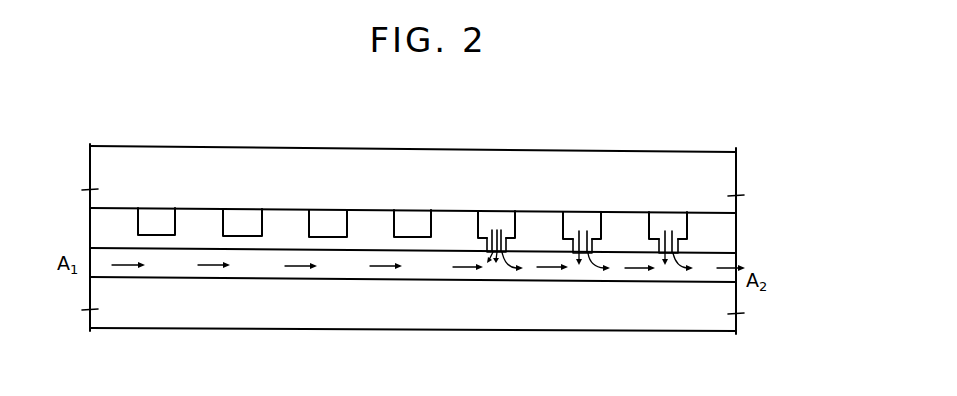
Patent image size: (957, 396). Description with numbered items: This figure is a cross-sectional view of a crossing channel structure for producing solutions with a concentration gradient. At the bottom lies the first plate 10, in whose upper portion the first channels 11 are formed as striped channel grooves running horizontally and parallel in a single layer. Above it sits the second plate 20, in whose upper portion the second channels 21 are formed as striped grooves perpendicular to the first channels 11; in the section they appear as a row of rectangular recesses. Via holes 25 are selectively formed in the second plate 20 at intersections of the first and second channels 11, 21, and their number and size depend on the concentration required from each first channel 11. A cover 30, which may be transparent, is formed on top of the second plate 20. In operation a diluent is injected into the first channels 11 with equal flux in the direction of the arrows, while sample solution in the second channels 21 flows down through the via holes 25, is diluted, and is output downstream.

The first plate 10 is at (775, 255).
The first channels 11 is at (369, 262).
The second plate 20 is at (736, 237).
The second channels 21 is at (413, 218).
The via holes 25 is at (486, 250).
The cover 30 is at (736, 182).